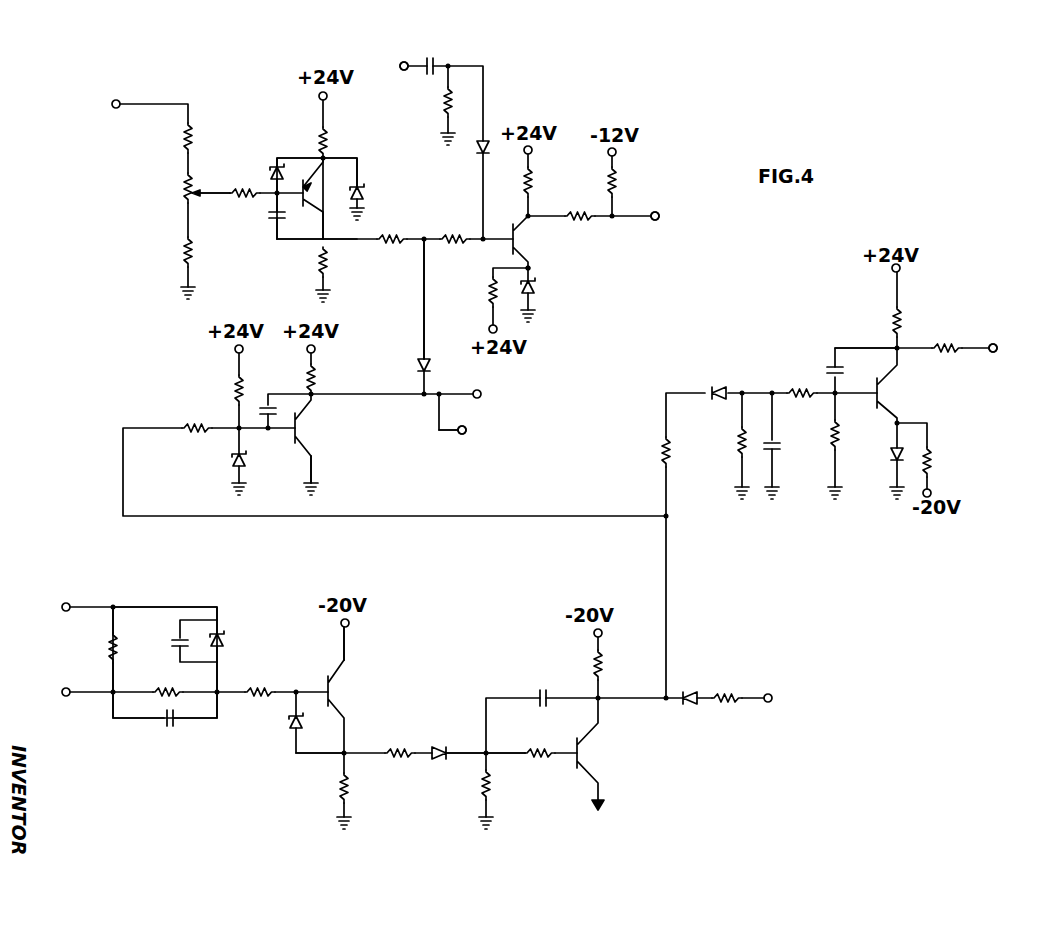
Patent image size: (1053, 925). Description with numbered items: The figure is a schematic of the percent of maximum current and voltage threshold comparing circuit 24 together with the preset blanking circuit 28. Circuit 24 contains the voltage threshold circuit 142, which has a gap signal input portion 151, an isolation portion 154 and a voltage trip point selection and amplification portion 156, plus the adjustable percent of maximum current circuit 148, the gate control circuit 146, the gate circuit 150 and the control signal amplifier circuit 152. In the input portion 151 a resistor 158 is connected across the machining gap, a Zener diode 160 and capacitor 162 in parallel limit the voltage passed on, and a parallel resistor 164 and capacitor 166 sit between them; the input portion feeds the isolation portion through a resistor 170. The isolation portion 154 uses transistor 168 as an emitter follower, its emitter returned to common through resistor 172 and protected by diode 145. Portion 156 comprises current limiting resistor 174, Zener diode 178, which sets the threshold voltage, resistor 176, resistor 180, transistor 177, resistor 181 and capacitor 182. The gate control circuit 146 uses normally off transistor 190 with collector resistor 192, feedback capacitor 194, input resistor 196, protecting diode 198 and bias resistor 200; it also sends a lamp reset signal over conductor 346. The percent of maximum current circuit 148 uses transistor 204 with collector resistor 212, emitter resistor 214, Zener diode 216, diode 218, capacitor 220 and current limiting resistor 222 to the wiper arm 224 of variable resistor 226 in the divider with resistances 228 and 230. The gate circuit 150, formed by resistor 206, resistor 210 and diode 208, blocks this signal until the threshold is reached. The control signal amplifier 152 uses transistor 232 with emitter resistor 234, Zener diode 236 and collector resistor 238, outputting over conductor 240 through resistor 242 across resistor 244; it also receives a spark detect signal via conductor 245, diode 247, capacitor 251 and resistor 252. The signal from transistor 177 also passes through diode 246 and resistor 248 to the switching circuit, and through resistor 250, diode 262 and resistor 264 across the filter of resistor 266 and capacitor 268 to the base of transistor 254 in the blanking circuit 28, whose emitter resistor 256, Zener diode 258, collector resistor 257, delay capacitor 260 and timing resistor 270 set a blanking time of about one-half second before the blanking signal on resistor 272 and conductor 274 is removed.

The percent of maximum current and voltage threshold comparing circuit 24 is at (67, 265).
The preset blanking circuit 28 is at (852, 347).
The voltage threshold circuit 142 is at (305, 755).
The protecting diode 145 is at (290, 722).
The gate control circuit 146 is at (313, 463).
The adjustable percent of maximum current circuit 148 is at (298, 154).
The gate circuit 150 is at (422, 310).
The gap signal input portion 151 is at (173, 602).
The control signal amplifier circuit 152 is at (530, 268).
The isolation portion 154 is at (346, 671).
The voltage trip point selection and amplification portion 156 is at (463, 758).
The resistor 158 is at (110, 648).
The Zener diode 160 is at (222, 645).
The capacitor 162 is at (176, 642).
The resistor 164 is at (172, 690).
The capacitor 166 is at (163, 724).
The transistor 168 is at (335, 690).
The resistor 170 is at (272, 690).
The resistor 172 is at (347, 785).
The current limiting resistor 174 is at (397, 749).
The resistor 176 is at (492, 790).
The transistor 177 is at (590, 755).
The Zener diode 178 is at (443, 748).
The resistor 180 is at (543, 751).
The resistor 181 is at (599, 676).
The capacitor 182 is at (538, 695).
The transistor 190 is at (302, 423).
The resistor 192 is at (316, 380).
The capacitor 194 is at (262, 398).
The current limiting resistor 196 is at (183, 425).
The protecting diode 198 is at (232, 458).
The resistor 200 is at (237, 385).
The transistor 204 is at (308, 194).
The resistor 206 is at (396, 246).
The diode 208 is at (430, 368).
The resistor 210 is at (459, 234).
The resistor 212 is at (320, 258).
The resistor 214 is at (325, 130).
The Zener diode 216 is at (364, 193).
The diode 218 is at (272, 172).
The capacitor 220 is at (275, 226).
The current limiting resistor 222 is at (245, 198).
The wiper arm 224 is at (214, 193).
The variable resistor 226 is at (185, 189).
The resistance 228 is at (185, 140).
The resistance 230 is at (185, 255).
The transistor 232 is at (518, 238).
The resistor 234 is at (490, 292).
The Zener diode 236 is at (536, 289).
The resistor 238 is at (532, 182).
The conductor 240 is at (636, 216).
The resistor 242 is at (585, 212).
The resistor 244 is at (614, 190).
The conductor 245 is at (407, 62).
The diode 246 is at (690, 706).
The diode 247 is at (480, 150).
The resistor 248 is at (732, 688).
The resistor 250 is at (662, 452).
The capacitor 251 is at (435, 64).
The resistor 252 is at (446, 102).
The transistor 254 is at (882, 388).
The resistor 256 is at (930, 467).
The resistor 257 is at (900, 320).
The Zener diode 258 is at (890, 470).
The capacitor 260 is at (830, 368).
The diode 262 is at (712, 386).
The resistor 264 is at (805, 388).
The resistor 266 is at (738, 440).
The capacitor 268 is at (775, 455).
The resistor 270 is at (838, 445).
The resistor 272 is at (945, 352).
The conductor 274 is at (966, 347).
The conductor 346 is at (451, 432).